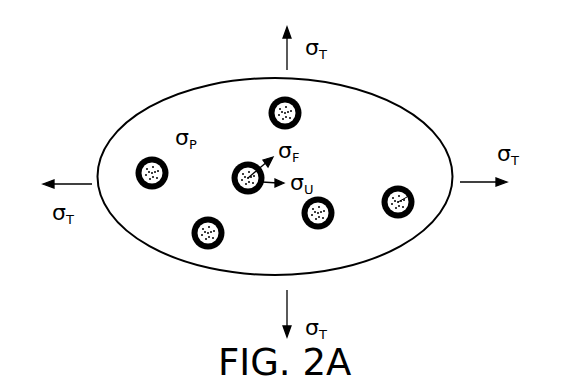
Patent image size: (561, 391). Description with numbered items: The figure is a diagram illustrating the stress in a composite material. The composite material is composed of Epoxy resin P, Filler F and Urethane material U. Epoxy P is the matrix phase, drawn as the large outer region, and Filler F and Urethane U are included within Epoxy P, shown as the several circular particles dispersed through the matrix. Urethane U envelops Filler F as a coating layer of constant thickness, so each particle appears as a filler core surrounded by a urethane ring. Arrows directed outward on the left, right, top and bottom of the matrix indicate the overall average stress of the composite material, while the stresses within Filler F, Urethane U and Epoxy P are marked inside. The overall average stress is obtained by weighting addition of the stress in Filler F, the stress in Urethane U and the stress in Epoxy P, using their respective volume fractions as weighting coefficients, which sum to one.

The Epoxy resin P is at (362, 122).
The Filler F is at (413, 187).
The Urethane material U is at (417, 197).